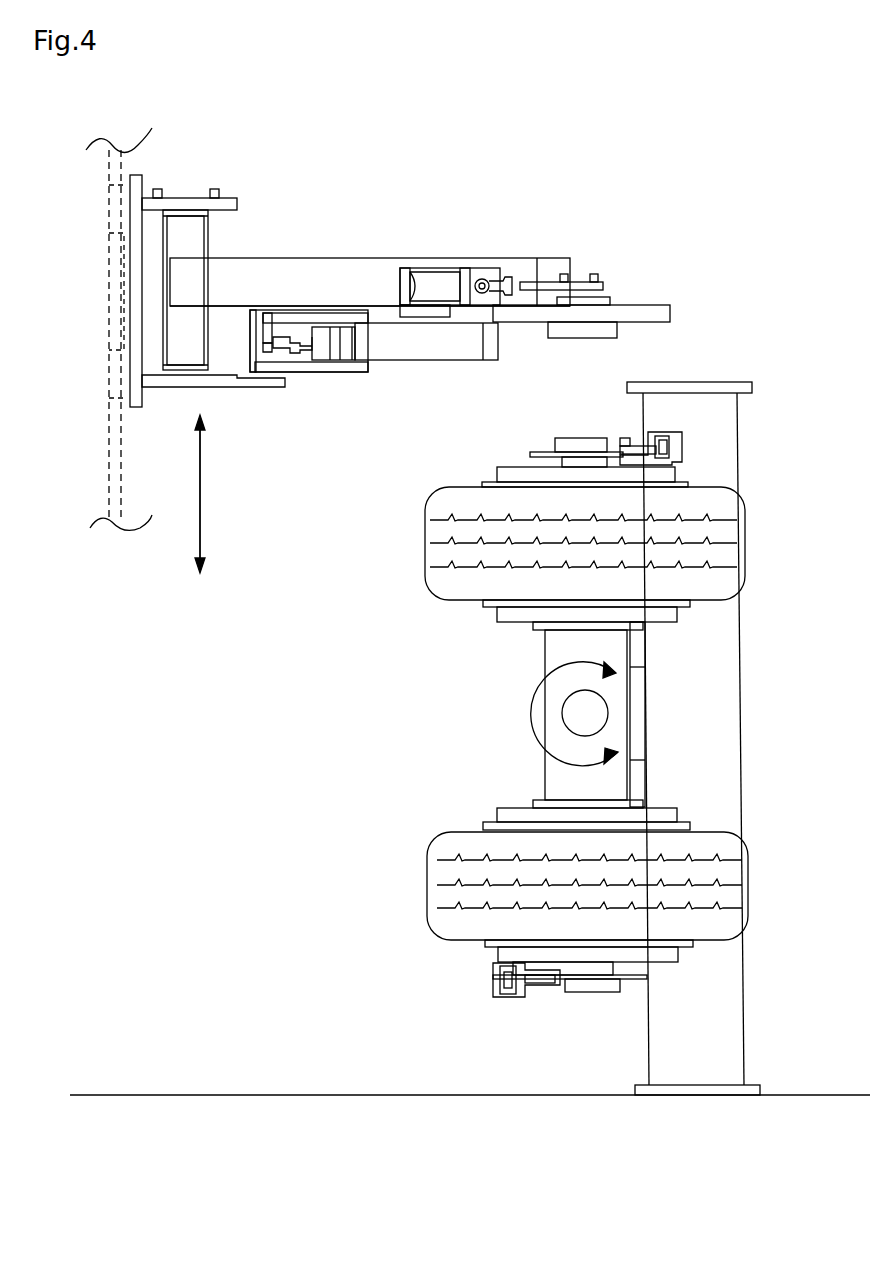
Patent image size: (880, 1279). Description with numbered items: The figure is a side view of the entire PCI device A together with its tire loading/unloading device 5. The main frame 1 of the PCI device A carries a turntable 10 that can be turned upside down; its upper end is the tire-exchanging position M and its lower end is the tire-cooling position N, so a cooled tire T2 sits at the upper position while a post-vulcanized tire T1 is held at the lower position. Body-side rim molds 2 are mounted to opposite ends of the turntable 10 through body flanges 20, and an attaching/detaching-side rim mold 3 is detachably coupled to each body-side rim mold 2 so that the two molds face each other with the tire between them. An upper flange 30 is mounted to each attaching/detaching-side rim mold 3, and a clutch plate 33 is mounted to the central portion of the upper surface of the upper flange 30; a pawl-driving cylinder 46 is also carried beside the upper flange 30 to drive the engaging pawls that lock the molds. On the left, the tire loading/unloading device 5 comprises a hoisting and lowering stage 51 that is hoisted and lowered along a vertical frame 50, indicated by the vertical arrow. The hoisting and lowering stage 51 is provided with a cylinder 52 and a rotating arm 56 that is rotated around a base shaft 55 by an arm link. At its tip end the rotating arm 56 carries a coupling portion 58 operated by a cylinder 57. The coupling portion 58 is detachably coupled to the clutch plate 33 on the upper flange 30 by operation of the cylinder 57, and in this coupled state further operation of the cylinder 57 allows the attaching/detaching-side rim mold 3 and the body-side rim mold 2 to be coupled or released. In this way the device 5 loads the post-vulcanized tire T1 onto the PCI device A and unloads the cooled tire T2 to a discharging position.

The main frame 1 is at (741, 700).
The body-side rim mold 2 is at (483, 605).
The attaching/detaching-side rim mold 3 is at (483, 483).
The tire loading/unloading device 5 is at (467, 250).
The turntable 10 is at (545, 648).
The body flange 20 is at (666, 617).
The upper flange 30 is at (503, 468).
The clutch plate 33 is at (570, 440).
The pawl-driving cylinder 46 is at (680, 447).
The vertical frame 50 is at (122, 458).
The hoisting and lowering stage 51 is at (250, 382).
The cylinder 52 is at (418, 358).
The base shaft 55 is at (209, 240).
The rotating arm 56 is at (357, 268).
The cylinder 57 is at (432, 278).
The coupling portion 58 is at (576, 331).
The PCI device A is at (743, 382).
The tire-exchanging position M is at (414, 553).
The tire-cooling position N is at (416, 903).
The post-vulcanized tire T1 is at (432, 924).
The cooled tire T2 is at (427, 584).